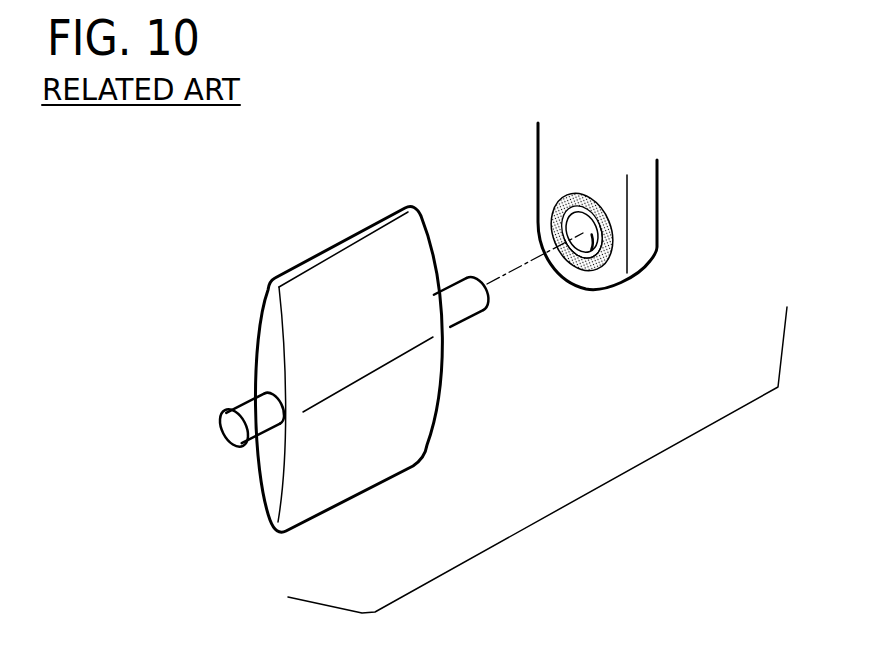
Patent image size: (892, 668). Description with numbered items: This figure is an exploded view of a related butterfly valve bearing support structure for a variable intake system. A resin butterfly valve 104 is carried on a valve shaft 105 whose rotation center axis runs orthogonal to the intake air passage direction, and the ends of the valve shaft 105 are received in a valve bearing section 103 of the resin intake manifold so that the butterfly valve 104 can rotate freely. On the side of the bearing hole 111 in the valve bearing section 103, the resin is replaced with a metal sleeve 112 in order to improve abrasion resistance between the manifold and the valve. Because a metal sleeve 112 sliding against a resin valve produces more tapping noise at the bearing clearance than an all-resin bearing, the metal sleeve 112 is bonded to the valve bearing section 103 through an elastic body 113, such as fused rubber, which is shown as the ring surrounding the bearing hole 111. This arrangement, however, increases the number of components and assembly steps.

The valve bearing section 103 is at (658, 171).
The butterfly valve 104 is at (338, 244).
The valve shaft 105 is at (240, 395).
The bearing hole 111 is at (568, 266).
The metal sleeve 112 is at (611, 277).
The elastic body 113 is at (570, 193).